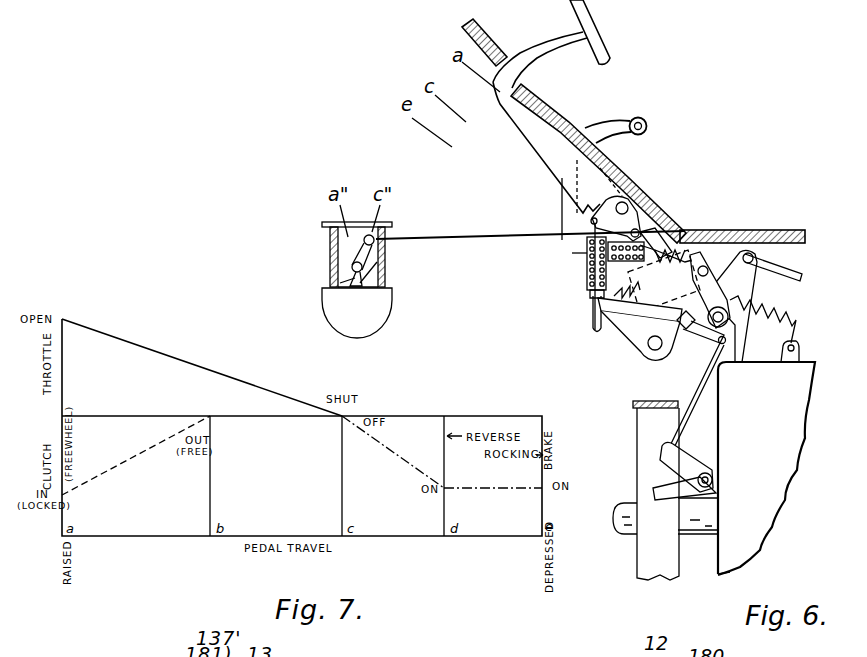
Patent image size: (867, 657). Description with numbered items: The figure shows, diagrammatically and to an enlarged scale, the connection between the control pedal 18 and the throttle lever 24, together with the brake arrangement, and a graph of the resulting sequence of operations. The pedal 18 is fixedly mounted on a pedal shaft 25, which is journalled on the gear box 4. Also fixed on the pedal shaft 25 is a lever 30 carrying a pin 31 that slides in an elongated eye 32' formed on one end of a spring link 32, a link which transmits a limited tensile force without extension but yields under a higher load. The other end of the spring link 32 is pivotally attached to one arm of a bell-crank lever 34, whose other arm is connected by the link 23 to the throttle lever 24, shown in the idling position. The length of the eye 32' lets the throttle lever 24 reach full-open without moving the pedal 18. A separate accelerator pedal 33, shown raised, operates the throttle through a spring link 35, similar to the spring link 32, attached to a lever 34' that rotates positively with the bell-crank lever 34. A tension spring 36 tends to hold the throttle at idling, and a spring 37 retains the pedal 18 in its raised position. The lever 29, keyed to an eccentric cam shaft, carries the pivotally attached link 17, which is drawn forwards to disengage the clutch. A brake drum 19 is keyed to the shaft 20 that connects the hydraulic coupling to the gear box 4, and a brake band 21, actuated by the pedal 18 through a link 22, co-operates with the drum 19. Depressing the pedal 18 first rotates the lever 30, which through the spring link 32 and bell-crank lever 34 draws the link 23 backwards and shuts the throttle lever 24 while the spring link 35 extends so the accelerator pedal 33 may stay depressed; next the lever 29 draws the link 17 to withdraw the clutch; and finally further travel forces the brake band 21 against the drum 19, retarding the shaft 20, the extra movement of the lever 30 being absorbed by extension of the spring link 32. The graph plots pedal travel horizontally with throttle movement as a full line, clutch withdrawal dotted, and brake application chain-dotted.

The control pedal 18 is at (599, 37).
The accelerator pedal 33 is at (630, 120).
The bell-crank lever 34 is at (637, 212).
The lever 34' is at (681, 216).
The lever 29 is at (738, 267).
The spring link 35 is at (668, 233).
The link 17 is at (770, 284).
The spring 37 is at (770, 322).
The tension spring 36 is at (642, 294).
The third link 23 is at (458, 238).
The throttle lever 24 is at (380, 257).
The spring link 32 is at (588, 263).
The elongated eye 32' is at (578, 327).
The pin 31 is at (592, 303).
The lever 30 is at (612, 318).
The pedal shaft 25 is at (680, 332).
The link 22 is at (705, 392).
The shaft 20 is at (628, 500).
The brake band 21 is at (650, 398).
The brake drum 19 is at (648, 572).
The gear box 4 is at (760, 531).